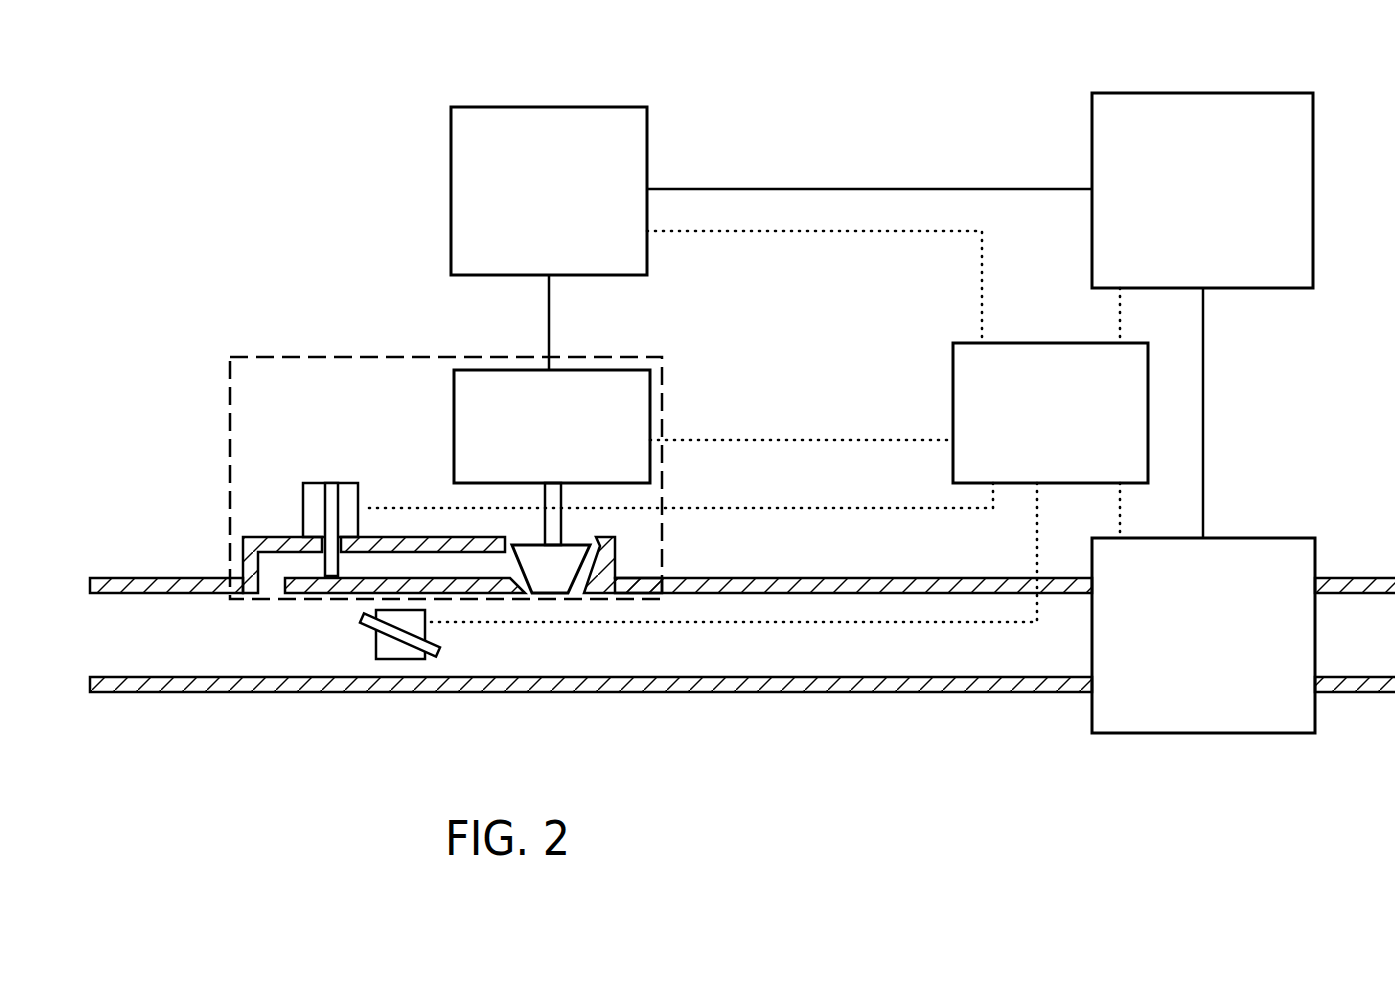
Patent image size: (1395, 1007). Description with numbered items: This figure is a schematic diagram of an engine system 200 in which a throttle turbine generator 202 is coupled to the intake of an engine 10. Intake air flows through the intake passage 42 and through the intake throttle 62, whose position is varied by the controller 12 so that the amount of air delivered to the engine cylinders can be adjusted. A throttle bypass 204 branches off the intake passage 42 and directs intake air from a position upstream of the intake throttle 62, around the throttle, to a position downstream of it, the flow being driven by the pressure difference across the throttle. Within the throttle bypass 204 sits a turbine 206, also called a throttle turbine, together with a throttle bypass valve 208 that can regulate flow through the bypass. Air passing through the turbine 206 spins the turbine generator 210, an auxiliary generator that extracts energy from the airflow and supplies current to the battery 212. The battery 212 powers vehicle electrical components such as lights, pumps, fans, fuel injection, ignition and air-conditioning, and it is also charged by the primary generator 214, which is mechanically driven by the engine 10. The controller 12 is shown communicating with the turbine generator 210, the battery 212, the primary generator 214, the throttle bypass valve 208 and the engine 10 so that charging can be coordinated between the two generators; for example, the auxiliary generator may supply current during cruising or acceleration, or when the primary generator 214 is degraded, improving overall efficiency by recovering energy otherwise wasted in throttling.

The engine system 200 is at (330, 78).
The throttle turbine generator 202 is at (260, 357).
The throttle bypass 204 is at (243, 558).
The turbine 206 is at (550, 597).
The throttle bypass valve 208 is at (315, 483).
The turbine generator 210 is at (570, 466).
The battery 212 is at (568, 216).
The primary generator 214 is at (1222, 229).
The controller 12 is at (1064, 437).
The engine 10 is at (1216, 659).
The intake passage 42 is at (173, 648).
The intake throttle 62 is at (395, 659).